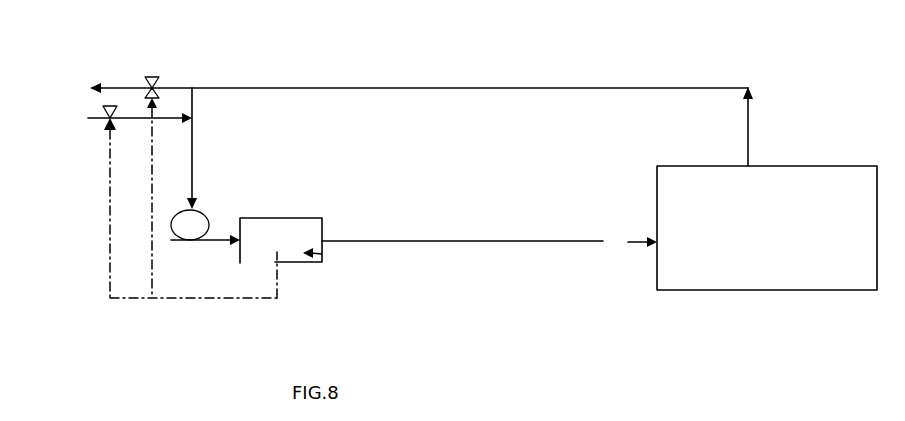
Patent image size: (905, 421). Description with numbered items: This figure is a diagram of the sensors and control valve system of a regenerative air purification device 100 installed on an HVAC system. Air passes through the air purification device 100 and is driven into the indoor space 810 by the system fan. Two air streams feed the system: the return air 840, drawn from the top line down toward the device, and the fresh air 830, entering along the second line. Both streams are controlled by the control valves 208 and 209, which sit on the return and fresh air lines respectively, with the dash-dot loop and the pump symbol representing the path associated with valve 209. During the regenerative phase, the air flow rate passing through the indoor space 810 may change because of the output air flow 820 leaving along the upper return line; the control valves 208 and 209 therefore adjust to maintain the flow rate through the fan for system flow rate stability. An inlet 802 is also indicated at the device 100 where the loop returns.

The regenerative air purification device 100 is at (281, 231).
The control valve 208 is at (170, 78).
The control valve 209 is at (104, 132).
The inlet 802 is at (322, 256).
The indoor 810 is at (599, 228).
The output air flow 820 is at (421, 112).
The fresh air 830 is at (122, 123).
The return air 840 is at (217, 148).